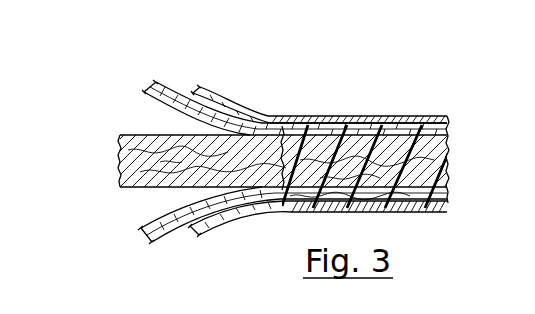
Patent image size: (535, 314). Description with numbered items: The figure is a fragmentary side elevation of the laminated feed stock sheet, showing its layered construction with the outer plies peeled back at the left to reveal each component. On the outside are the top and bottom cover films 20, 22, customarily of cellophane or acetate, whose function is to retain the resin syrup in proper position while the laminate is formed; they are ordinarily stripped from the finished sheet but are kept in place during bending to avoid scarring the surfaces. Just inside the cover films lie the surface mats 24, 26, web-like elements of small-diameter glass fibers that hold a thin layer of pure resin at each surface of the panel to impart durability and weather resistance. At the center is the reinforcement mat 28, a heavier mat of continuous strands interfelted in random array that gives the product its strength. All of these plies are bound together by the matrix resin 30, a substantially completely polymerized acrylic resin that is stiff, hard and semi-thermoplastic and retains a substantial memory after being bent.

The top cover film 20 is at (213, 103).
The bottom cover film 22 is at (205, 232).
The surface mat 24 is at (157, 88).
The surface mat 26 is at (148, 220).
The reinforcement mat 28 is at (138, 135).
The matrix resin 30 is at (333, 138).